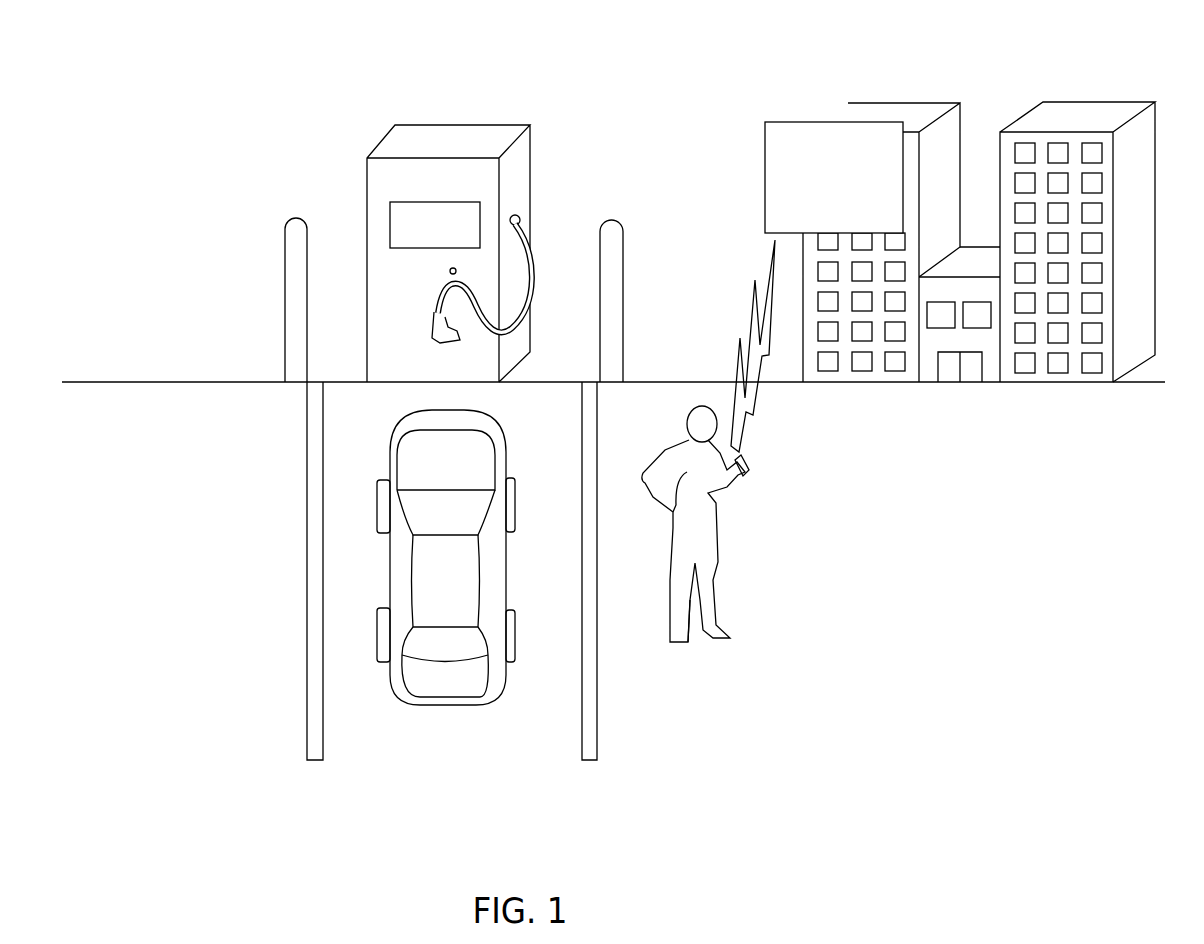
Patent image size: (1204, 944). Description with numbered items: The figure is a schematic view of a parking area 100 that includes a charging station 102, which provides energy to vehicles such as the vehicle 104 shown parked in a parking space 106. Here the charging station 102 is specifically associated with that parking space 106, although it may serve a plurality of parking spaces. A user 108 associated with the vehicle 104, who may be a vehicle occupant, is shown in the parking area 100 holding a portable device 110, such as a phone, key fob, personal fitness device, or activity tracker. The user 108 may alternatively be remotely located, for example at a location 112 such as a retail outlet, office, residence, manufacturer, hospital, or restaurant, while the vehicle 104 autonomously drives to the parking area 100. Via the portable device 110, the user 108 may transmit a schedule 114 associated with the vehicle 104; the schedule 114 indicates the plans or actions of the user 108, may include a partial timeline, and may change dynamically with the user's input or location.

The parking area 100 is at (152, 41).
The charging station 102 is at (430, 153).
The vehicle 104 is at (431, 588).
The parking space 106 is at (585, 770).
The user 108 is at (672, 528).
The portable device 110 is at (742, 452).
The location 112 is at (1067, 98).
The schedule 114 is at (817, 201).